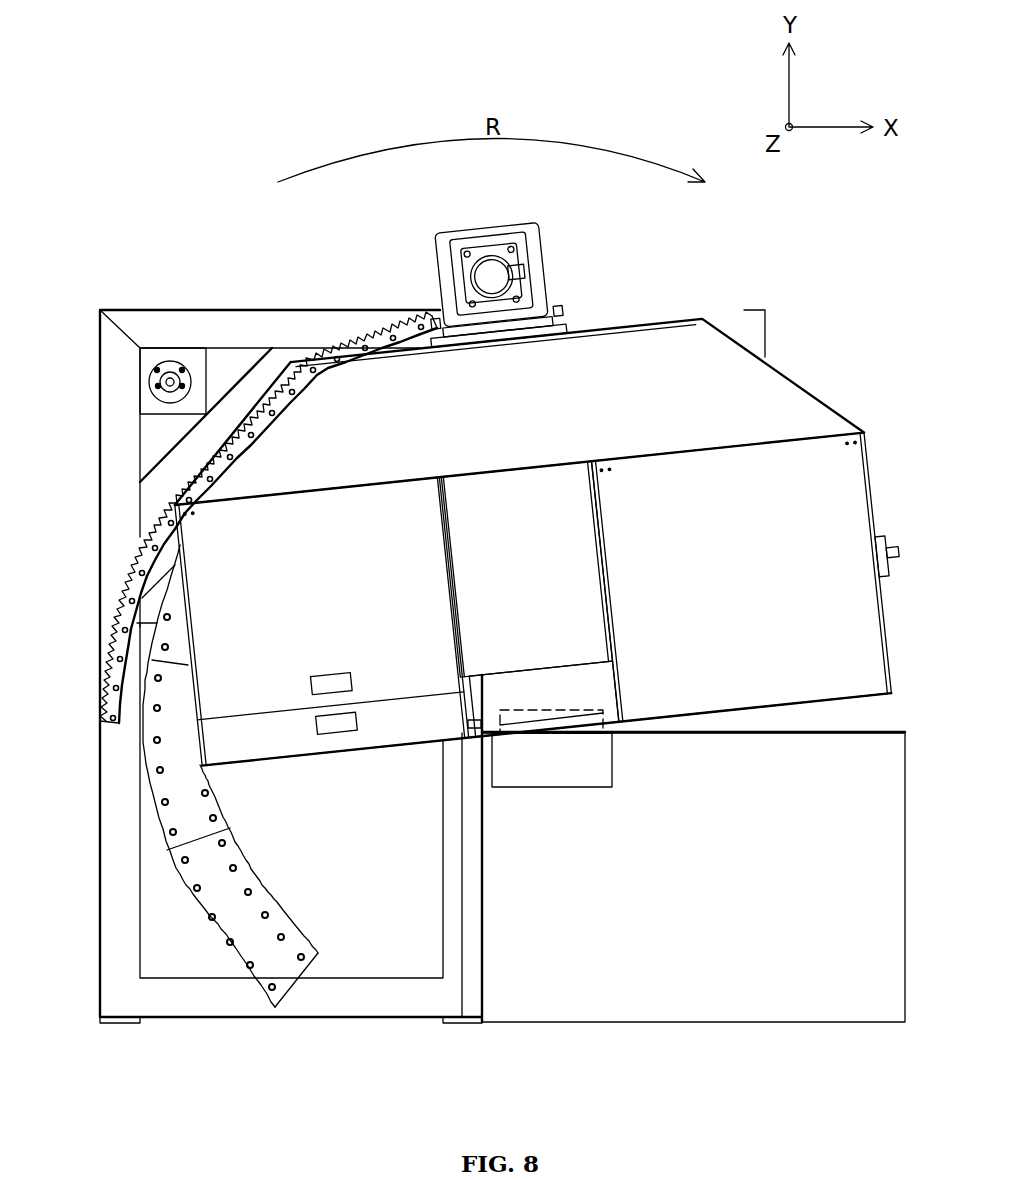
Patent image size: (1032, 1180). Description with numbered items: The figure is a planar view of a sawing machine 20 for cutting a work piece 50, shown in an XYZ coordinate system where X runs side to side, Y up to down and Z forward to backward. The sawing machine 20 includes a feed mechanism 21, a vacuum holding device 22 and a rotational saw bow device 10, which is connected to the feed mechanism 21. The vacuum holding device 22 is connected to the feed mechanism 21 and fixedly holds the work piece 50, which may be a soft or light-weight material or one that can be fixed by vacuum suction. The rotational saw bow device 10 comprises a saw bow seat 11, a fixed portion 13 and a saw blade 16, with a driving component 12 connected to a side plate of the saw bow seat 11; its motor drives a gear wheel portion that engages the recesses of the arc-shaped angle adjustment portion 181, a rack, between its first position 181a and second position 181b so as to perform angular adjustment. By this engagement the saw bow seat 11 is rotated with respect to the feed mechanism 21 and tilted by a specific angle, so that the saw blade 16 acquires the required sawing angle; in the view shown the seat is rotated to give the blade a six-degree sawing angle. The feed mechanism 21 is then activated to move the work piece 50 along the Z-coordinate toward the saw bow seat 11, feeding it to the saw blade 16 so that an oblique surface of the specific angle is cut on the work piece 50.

The rotational saw bow device without rotary axis 10 is at (198, 274).
The saw bow seat 11 is at (853, 472).
The driving component 12 is at (492, 270).
The fixed portion 13 is at (744, 318).
The saw blade 16 is at (540, 722).
The sawing machine 20 is at (152, 150).
The feed mechanism 21 is at (790, 1005).
The vacuum holding device 22 is at (587, 778).
The work piece 50 is at (593, 728).
The angle adjustment portion 181 is at (130, 552).
The first position 181a is at (98, 710).
The second position 181b is at (436, 316).